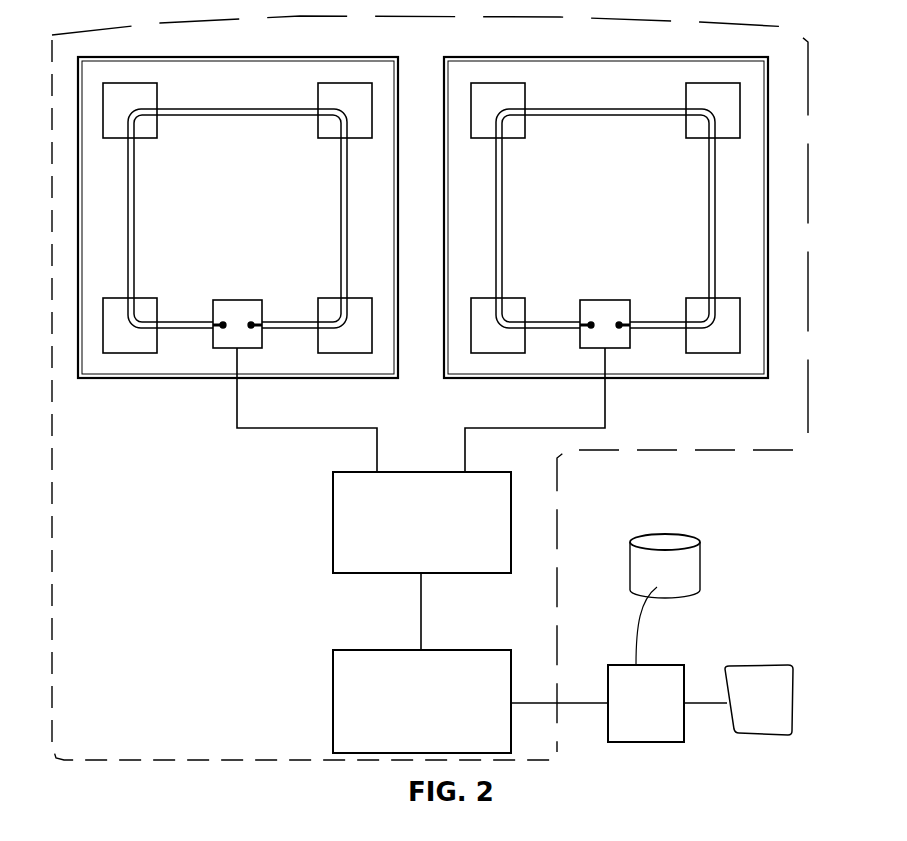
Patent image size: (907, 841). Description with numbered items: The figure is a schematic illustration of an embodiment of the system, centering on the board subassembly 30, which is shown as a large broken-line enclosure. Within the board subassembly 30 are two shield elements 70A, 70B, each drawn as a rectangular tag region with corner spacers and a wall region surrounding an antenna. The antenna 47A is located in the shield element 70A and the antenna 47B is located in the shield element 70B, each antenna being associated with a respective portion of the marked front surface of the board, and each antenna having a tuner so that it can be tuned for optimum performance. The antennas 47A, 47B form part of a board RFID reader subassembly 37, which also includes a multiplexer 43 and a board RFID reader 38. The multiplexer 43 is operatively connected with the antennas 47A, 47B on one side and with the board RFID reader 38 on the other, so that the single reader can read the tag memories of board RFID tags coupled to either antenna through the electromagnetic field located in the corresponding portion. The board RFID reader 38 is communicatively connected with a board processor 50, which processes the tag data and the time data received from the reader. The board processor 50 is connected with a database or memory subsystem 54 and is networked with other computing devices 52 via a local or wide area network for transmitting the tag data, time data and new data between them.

The board subassembly 30 is at (818, 309).
The shield element 70A is at (238, 203).
The shield element 70B is at (606, 204).
The antenna 47A is at (130, 233).
The antenna 47B is at (498, 240).
The board RFID reader subassembly 37 is at (333, 612).
The multiplexer 43 is at (340, 529).
The board RFID reader 38 is at (341, 669).
The board processor 50 is at (661, 669).
The database or memory subsystem 54 is at (697, 562).
The other computing devices 52 is at (787, 685).